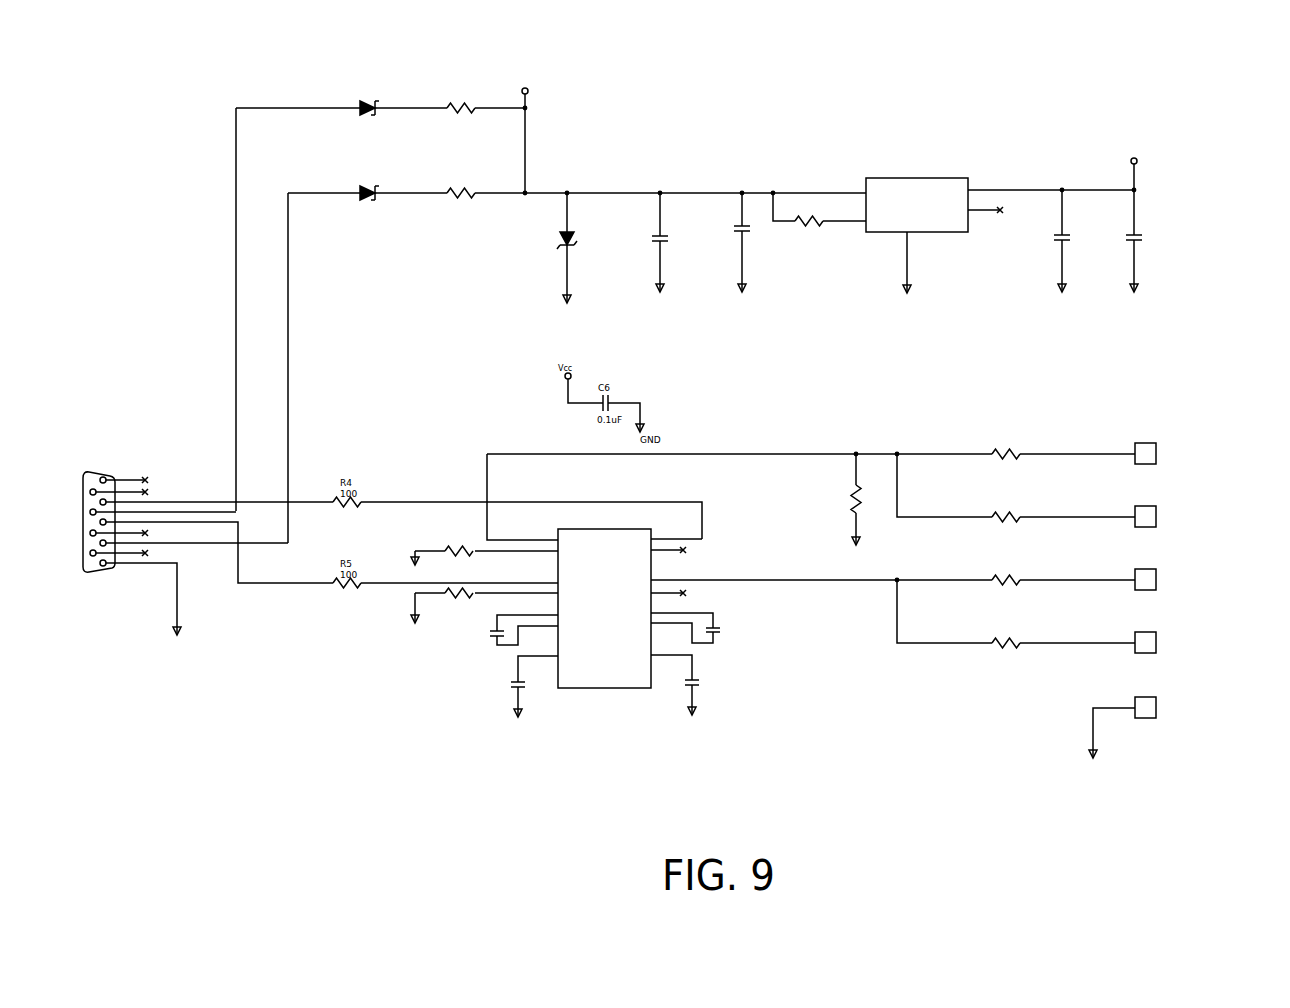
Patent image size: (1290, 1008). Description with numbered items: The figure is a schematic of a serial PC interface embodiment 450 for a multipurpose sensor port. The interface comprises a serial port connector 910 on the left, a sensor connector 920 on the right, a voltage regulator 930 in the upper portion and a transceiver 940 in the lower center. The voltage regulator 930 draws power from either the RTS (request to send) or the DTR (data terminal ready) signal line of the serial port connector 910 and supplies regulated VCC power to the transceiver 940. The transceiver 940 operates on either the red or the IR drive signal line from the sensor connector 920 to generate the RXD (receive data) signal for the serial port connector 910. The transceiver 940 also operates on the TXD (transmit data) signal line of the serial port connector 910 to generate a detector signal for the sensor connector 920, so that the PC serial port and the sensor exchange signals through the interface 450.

The RS-232 PC interface embodiment 450 is at (739, 60).
The RS-232 connector 910 is at (108, 471).
The sensor connector 920 is at (1147, 408).
The voltage regulator 930 is at (932, 178).
The transceiver 940 is at (600, 688).